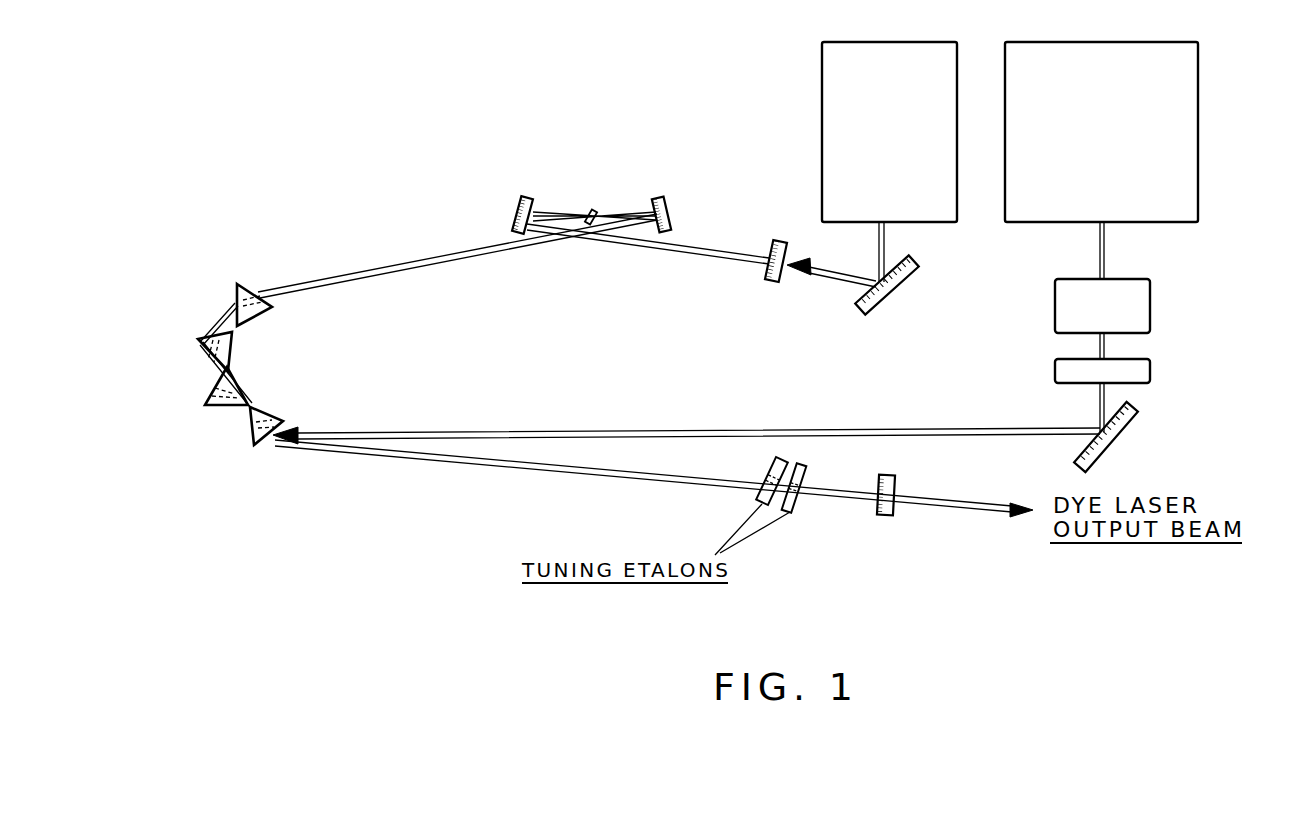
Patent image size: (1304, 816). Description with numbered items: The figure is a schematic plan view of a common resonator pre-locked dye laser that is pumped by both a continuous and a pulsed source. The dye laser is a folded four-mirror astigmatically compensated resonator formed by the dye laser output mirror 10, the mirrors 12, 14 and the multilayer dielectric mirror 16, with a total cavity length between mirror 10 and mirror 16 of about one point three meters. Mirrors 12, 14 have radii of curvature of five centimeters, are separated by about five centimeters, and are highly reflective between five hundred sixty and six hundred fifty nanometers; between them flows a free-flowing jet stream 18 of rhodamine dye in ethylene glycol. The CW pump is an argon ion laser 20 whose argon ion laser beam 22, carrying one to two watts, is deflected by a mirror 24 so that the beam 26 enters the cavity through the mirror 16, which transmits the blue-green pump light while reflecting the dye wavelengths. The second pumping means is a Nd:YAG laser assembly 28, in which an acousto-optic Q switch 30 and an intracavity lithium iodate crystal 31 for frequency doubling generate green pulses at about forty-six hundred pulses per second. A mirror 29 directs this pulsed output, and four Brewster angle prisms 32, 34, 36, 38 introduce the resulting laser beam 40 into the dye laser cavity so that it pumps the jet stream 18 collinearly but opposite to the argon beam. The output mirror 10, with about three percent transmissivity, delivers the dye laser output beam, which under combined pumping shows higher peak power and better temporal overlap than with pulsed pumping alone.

The dye laser output mirror 10 is at (882, 516).
The mirror 12 is at (663, 202).
The mirror 14 is at (527, 197).
The multilayer dielectric mirror 16 is at (775, 240).
The jet stream 18 is at (589, 207).
The argon ion laser 20 is at (895, 52).
The argon ion laser beam 22 is at (885, 240).
The mirror 24 is at (905, 278).
The beam 26 is at (837, 280).
The Nd:YAG laser assembly 28 is at (1187, 168).
The steering mirror 29 is at (1100, 400).
The acousto-optic Q switch 30 is at (1143, 307).
The intracavity LiIO3 crystal 31 is at (1147, 370).
The Brewster angle prism 32 is at (258, 446).
The Brewster angle prism 34 is at (213, 408).
The Brewster angle prism 36 is at (198, 342).
The Brewster angle prism 38 is at (237, 293).
The 532.1 nm laser beam 40 is at (387, 267).